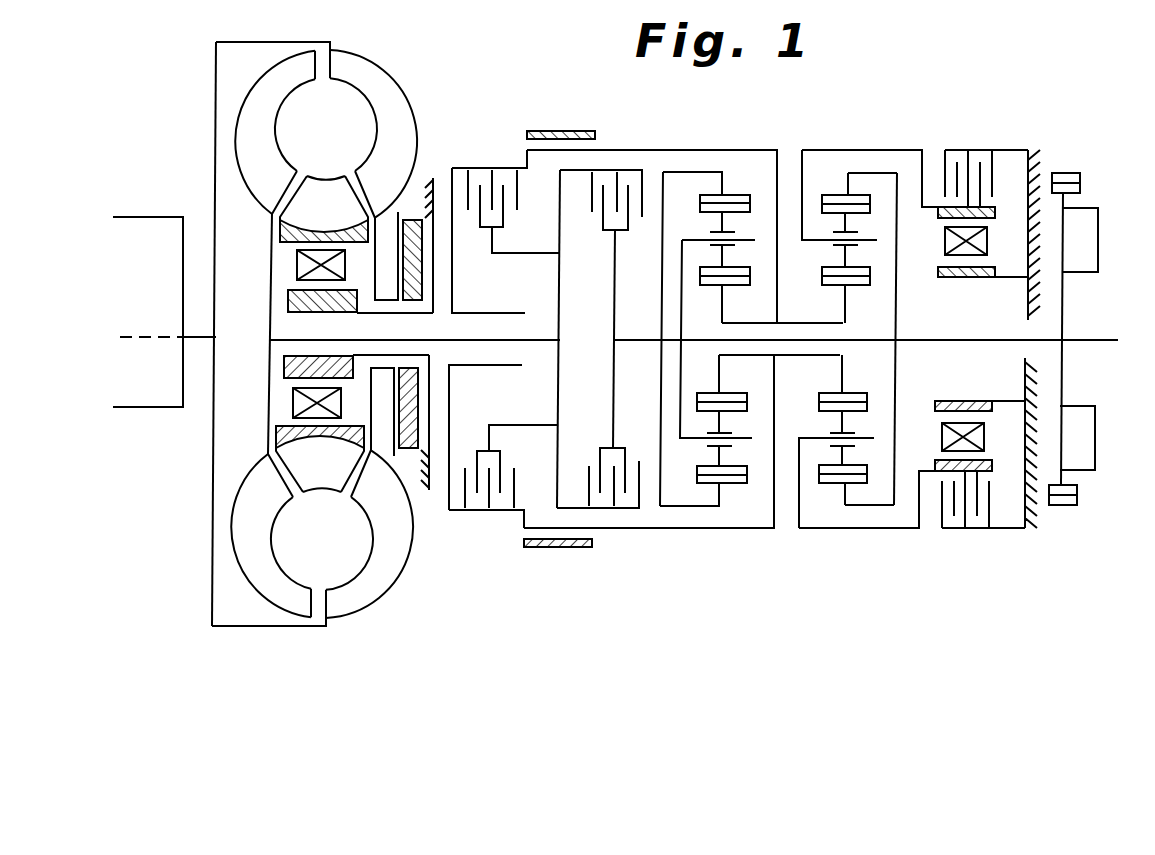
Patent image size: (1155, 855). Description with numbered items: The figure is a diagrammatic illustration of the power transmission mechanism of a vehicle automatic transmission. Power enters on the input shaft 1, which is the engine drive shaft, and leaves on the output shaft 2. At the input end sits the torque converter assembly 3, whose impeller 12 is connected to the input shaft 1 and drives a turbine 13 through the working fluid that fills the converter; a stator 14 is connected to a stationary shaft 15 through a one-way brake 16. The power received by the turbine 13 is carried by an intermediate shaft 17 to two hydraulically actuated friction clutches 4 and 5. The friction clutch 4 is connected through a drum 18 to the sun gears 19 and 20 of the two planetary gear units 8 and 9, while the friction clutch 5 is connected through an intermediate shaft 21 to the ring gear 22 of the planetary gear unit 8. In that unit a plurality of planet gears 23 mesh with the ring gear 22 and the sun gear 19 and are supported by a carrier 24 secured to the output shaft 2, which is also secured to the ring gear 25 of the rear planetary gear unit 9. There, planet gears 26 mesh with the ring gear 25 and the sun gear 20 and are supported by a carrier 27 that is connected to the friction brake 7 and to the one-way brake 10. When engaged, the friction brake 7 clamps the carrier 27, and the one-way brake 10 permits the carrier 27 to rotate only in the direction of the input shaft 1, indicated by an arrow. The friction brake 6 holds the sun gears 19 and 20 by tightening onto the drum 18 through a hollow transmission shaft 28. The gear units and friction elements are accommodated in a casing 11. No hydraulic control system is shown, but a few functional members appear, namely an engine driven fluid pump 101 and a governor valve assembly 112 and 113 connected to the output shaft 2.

The input shaft 1 is at (190, 346).
The output shaft 2 is at (1089, 340).
The torque converter assembly 3 is at (346, 54).
The friction clutch 4 is at (484, 167).
The friction clutch 5 is at (625, 166).
The friction brake 6 is at (562, 129).
The friction brake 7 is at (968, 148).
The planetary gear unit 8 is at (720, 292).
The planetary gear unit 9 is at (839, 303).
The one-way brake 10 is at (944, 241).
The casing 11 is at (439, 177).
The impeller 12 is at (380, 146).
The turbine 13 is at (240, 146).
The stator 14 is at (306, 213).
The stationary shaft 15 is at (385, 314).
The one-way brake 16 is at (293, 264).
The intermediate shaft 17 is at (281, 341).
The drum 18 is at (620, 148).
The sun gear 19 is at (737, 290).
The sun gear 20 is at (823, 287).
The intermediate shaft 21 is at (634, 339).
The ring gear 22 is at (710, 196).
The planet gears 23 is at (737, 265).
The carrier 24 is at (683, 297).
The ring gear 25 is at (862, 192).
The planet gears 26 is at (821, 268).
The carrier 27 is at (802, 222).
The hollow transmission shaft 28 is at (800, 359).
The engine driven fluid pump 101 is at (407, 456).
The governor valve assembly 112 is at (1096, 437).
The governor valve assembly 113 is at (1099, 217).